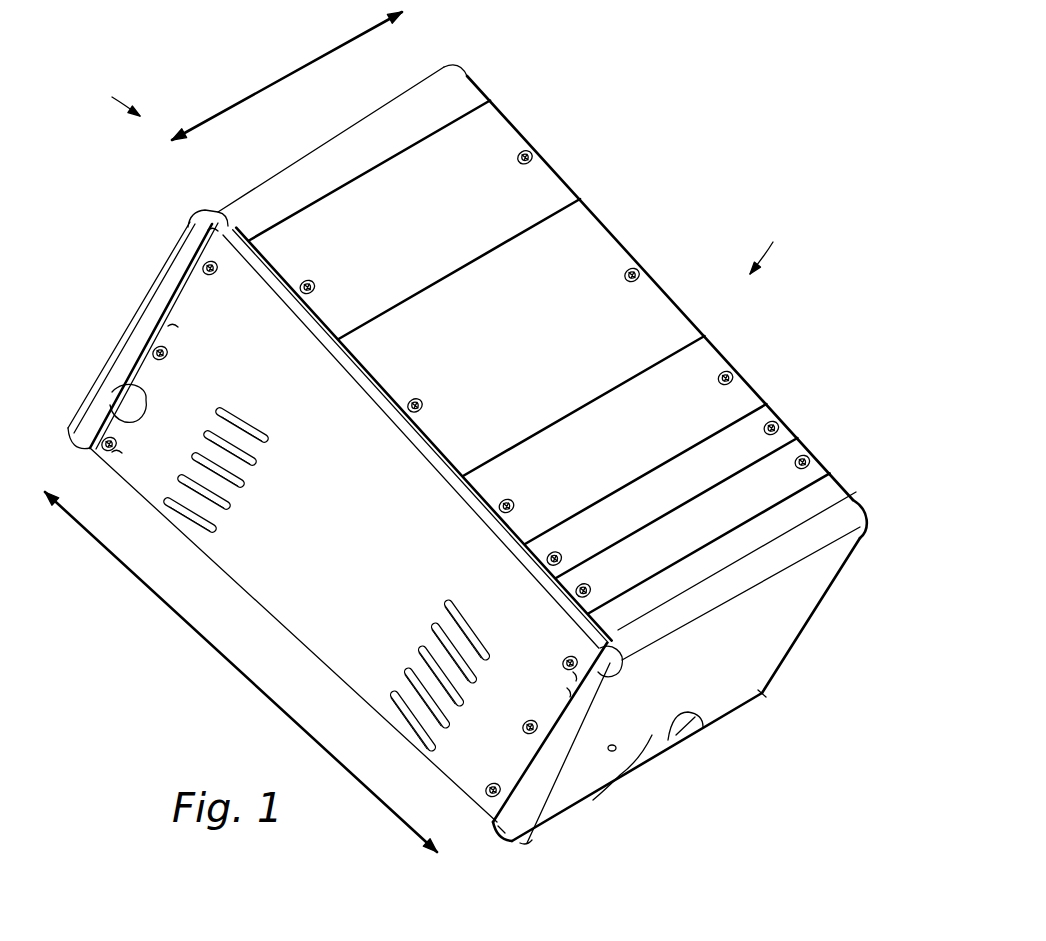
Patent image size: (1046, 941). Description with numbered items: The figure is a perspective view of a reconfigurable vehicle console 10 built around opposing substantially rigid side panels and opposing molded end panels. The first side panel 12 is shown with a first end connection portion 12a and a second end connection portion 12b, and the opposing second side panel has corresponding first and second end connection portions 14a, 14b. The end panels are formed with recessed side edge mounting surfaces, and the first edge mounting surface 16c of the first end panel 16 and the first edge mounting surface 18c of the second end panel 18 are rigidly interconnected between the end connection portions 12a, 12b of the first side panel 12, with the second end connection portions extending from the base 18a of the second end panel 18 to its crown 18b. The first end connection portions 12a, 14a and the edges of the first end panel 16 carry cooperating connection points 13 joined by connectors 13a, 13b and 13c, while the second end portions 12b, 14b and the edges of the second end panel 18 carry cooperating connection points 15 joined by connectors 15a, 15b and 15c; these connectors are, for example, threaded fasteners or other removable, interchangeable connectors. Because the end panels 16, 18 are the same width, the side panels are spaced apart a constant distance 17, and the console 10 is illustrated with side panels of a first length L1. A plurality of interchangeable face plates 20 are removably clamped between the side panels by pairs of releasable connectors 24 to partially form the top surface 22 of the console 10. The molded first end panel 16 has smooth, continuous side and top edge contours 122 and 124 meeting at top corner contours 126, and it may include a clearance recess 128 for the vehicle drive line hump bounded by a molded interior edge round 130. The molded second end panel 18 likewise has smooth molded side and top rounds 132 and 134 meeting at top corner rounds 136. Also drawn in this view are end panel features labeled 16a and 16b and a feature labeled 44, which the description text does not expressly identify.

The reconfigurable vehicle console 10 is at (112, 95).
The first side panel 12 is at (262, 590).
The first end connection portion of the first side panel 12a is at (488, 810).
The second end connection portion of the first side panel 12b is at (176, 312).
The cooperating connection points 13 is at (490, 783).
The connector 13a is at (576, 680).
The connector 13b is at (570, 690).
The connector 13c is at (486, 790).
The first end connection portion of the second side panel 14a is at (846, 492).
The second end connection portion of the second side panel 14b is at (481, 92).
The cooperating connection points 15 is at (198, 270).
The connector 15a is at (213, 233).
The connector 15b is at (172, 330).
The connector 15c is at (117, 450).
The first end panel 16 is at (748, 700).
The corner of second end cap 16a is at (768, 697).
The tab of second end cap 16b is at (597, 646).
The first recessed side edge mounting surface of the first end panel 16c is at (527, 840).
The constant distance 17 is at (297, 70).
The second end panel 18 is at (176, 247).
The base of the second end panel 18a is at (83, 440).
The crown of the second end panel 18b is at (224, 213).
The first recessed side edge mounting surface of the second end panel 18c is at (120, 408).
The interchangeable face plates 20 is at (438, 239).
The top surface 22 is at (771, 245).
The releasable connectors 24 is at (535, 152).
The ventilation louvers 44 is at (183, 517).
The side edge contour 122 is at (793, 653).
The top edge contour 124 is at (763, 580).
The top corner contours 126 is at (872, 512).
The clearance recess 128 is at (623, 773).
The molded interior edge round 130 is at (703, 728).
The side edge round 132 is at (107, 369).
The top edge round 134 is at (340, 133).
The top corner rounds 136 is at (458, 67).
The first length L1 is at (253, 686).